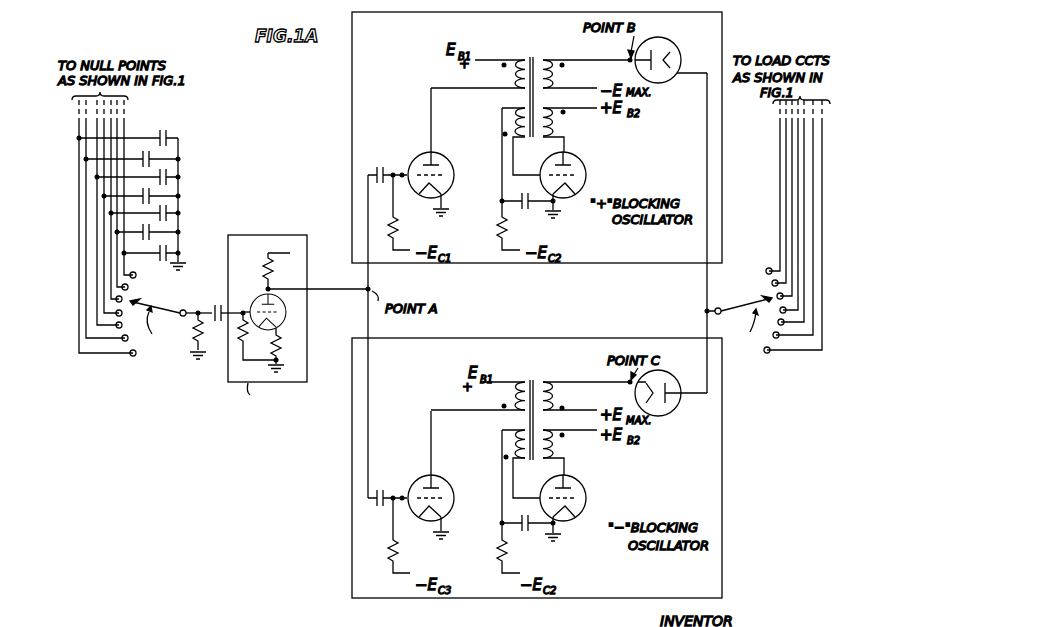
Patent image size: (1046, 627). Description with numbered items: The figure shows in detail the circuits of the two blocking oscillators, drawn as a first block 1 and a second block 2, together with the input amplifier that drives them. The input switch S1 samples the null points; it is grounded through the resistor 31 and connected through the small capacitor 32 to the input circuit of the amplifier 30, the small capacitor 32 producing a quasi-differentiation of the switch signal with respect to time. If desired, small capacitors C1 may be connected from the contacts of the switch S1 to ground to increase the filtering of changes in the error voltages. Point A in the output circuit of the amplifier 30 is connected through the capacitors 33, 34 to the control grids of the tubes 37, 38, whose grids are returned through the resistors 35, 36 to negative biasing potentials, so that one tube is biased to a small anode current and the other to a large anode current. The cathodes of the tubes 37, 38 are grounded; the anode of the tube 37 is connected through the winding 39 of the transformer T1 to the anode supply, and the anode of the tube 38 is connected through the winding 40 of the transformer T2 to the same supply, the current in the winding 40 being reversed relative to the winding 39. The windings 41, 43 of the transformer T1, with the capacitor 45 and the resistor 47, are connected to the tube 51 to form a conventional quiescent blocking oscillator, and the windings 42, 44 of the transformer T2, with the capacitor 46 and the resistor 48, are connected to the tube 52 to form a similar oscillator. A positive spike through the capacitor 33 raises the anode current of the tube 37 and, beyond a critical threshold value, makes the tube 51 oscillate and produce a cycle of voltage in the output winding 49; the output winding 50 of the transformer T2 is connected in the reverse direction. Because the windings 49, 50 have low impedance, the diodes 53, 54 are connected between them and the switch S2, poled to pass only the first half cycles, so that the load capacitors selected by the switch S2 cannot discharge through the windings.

The positive blocking oscillator block 1 is at (537, 137).
The negative blocking oscillator block 2 is at (537, 468).
The amplifier 30 is at (262, 226).
The resistor 31 is at (191, 340).
The small capacitor 32 is at (217, 305).
The capacitor 33 is at (381, 165).
The capacitor 34 is at (377, 508).
The resistor 35 is at (398, 231).
The resistor 36 is at (398, 556).
The tube 37 is at (446, 156).
The tube 38 is at (446, 480).
The winding 39 is at (508, 79).
The winding 40 is at (515, 402).
The winding 41 is at (500, 125).
The winding 42 is at (500, 447).
The winding 43 is at (563, 123).
The winding 44 is at (563, 456).
The capacitor 45 is at (524, 211).
The capacitor 46 is at (524, 536).
The resistor 47 is at (494, 231).
The resistor 48 is at (492, 556).
The output winding 49 is at (563, 75).
The output winding 50 is at (560, 397).
The tube 51 is at (583, 156).
The tube 52 is at (583, 480).
The diode 53 is at (672, 42).
The diode 54 is at (668, 376).
The input switch S1 is at (158, 311).
The switch S2 is at (739, 311).
The transformer T1 is at (541, 60).
The transformer T2 is at (541, 382).
The small capacitors C1 is at (191, 118).